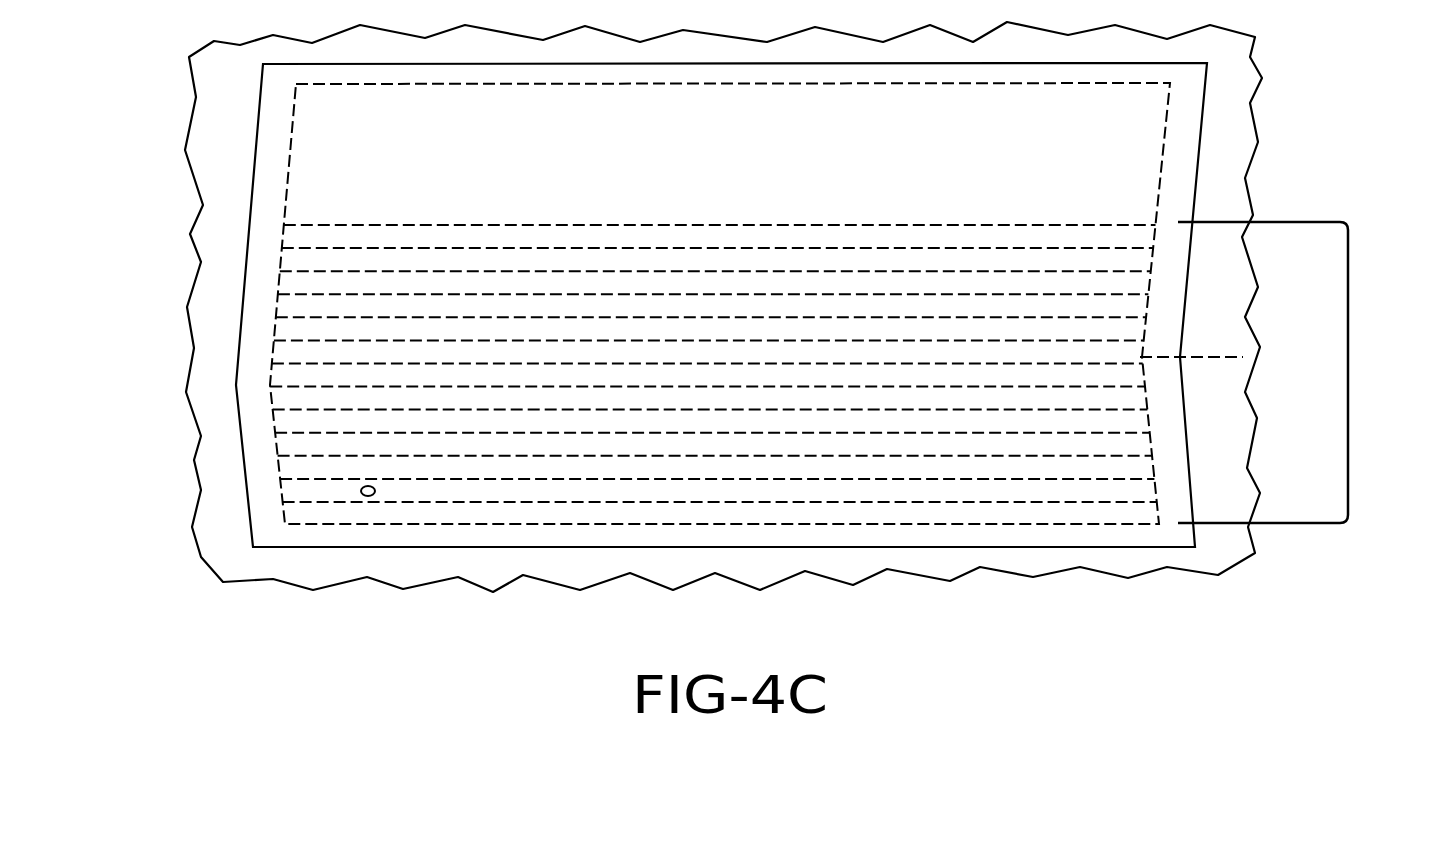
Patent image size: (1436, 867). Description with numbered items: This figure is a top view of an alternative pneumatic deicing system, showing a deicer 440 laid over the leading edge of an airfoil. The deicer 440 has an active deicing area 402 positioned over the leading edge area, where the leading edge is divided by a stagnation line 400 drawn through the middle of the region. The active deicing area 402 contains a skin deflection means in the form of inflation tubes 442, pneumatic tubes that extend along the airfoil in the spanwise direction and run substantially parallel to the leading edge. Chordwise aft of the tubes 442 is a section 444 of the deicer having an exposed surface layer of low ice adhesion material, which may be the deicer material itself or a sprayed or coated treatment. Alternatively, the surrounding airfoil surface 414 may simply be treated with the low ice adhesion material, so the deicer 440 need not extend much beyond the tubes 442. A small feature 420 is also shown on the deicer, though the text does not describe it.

The stagnation line 400 is at (1200, 357).
The active deicing area 402 is at (1348, 363).
The airfoil surface 414 is at (560, 568).
The hole 420 is at (372, 497).
The deicer 440 is at (1028, 558).
The inflation tubes 442 is at (300, 262).
The section of deicer having low ice adhesion surface layer 444 is at (730, 168).